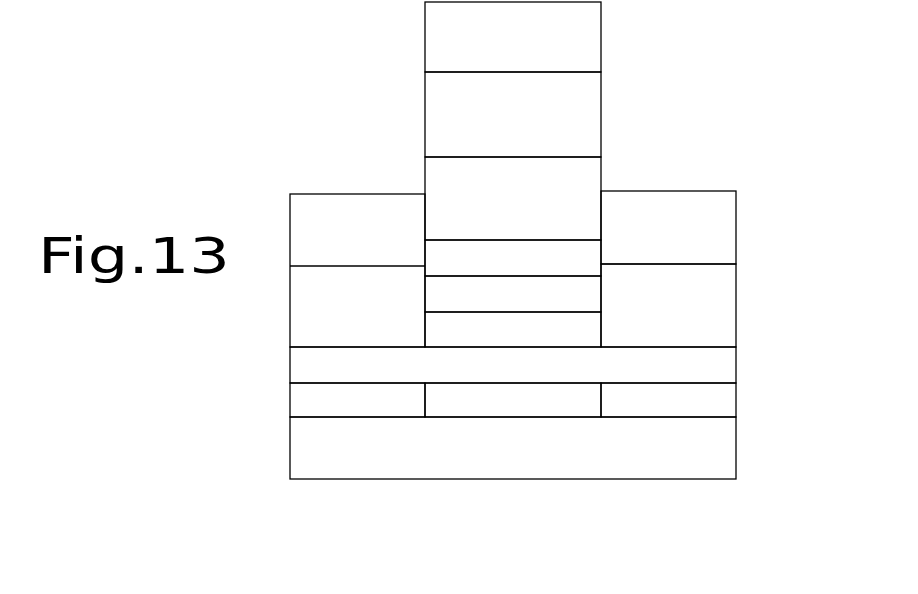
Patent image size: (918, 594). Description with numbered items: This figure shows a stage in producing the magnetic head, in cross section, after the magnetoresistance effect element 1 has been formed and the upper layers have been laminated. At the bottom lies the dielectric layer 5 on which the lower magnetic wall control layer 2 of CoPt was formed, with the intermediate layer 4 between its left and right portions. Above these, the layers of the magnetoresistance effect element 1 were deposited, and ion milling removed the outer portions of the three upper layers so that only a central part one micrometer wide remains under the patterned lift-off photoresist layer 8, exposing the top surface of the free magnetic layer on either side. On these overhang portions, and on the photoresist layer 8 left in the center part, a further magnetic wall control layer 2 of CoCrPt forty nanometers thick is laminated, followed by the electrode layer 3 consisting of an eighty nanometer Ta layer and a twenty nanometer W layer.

The magnetoresistance effect element 1 is at (576, 280).
The magnetic wall control layer 2 is at (580, 110).
The electrode layer 3 is at (583, 45).
The intermediate layer 4 is at (563, 407).
The dielectric layer 5 is at (707, 457).
The photoresist layer 8 is at (583, 173).